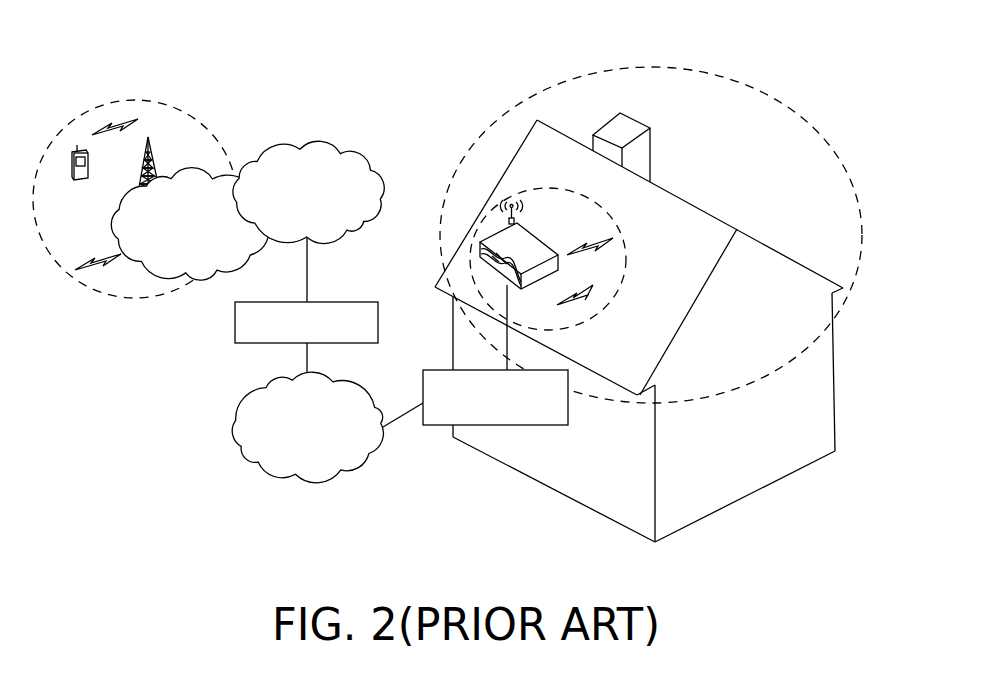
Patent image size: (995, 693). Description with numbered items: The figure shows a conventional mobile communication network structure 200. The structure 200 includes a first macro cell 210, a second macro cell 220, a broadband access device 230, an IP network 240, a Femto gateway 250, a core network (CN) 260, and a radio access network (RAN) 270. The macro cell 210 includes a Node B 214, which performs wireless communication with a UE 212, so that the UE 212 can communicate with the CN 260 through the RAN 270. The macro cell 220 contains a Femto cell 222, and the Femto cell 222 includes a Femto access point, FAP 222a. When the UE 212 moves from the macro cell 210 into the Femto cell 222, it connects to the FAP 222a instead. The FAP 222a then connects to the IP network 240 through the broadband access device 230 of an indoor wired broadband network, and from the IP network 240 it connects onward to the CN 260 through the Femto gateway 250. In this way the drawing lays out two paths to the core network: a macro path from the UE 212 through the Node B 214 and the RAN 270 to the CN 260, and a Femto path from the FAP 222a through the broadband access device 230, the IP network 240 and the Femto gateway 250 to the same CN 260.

The communication network structure 200 is at (838, 570).
The macro cell 210 is at (147, 100).
The UE 212 is at (77, 146).
The Node B 214 is at (153, 160).
The macro cell 220 is at (577, 80).
The Femto cell 222 is at (530, 188).
The FAP 222a is at (483, 240).
The broadband access device 230 is at (433, 425).
The IP network 240 is at (358, 380).
The Femto gateway 250 is at (333, 302).
The CN 260 is at (357, 147).
The RAN 270 is at (143, 272).